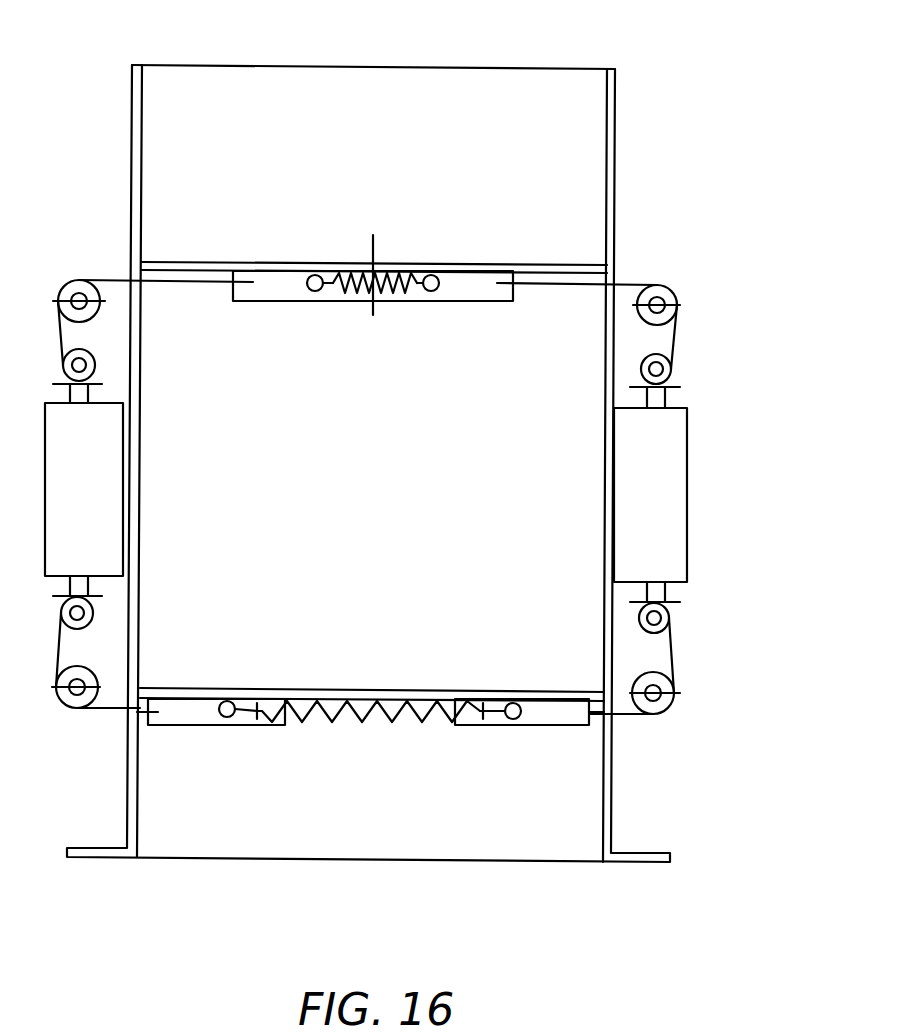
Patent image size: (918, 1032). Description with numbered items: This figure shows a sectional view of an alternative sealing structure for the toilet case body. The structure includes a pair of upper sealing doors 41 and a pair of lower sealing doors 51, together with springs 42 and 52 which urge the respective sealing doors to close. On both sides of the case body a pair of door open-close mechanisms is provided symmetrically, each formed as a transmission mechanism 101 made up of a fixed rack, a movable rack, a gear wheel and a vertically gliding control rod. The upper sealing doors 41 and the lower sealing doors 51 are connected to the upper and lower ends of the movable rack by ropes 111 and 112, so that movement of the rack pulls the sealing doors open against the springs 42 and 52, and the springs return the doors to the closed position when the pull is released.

The upper sealing door 41 is at (252, 277).
The spring 42 is at (403, 272).
The lower sealing door 51 is at (152, 713).
The spring 52 is at (332, 722).
The transmission mechanism 101 is at (657, 503).
The rope 111 is at (677, 318).
The rope 112 is at (673, 657).